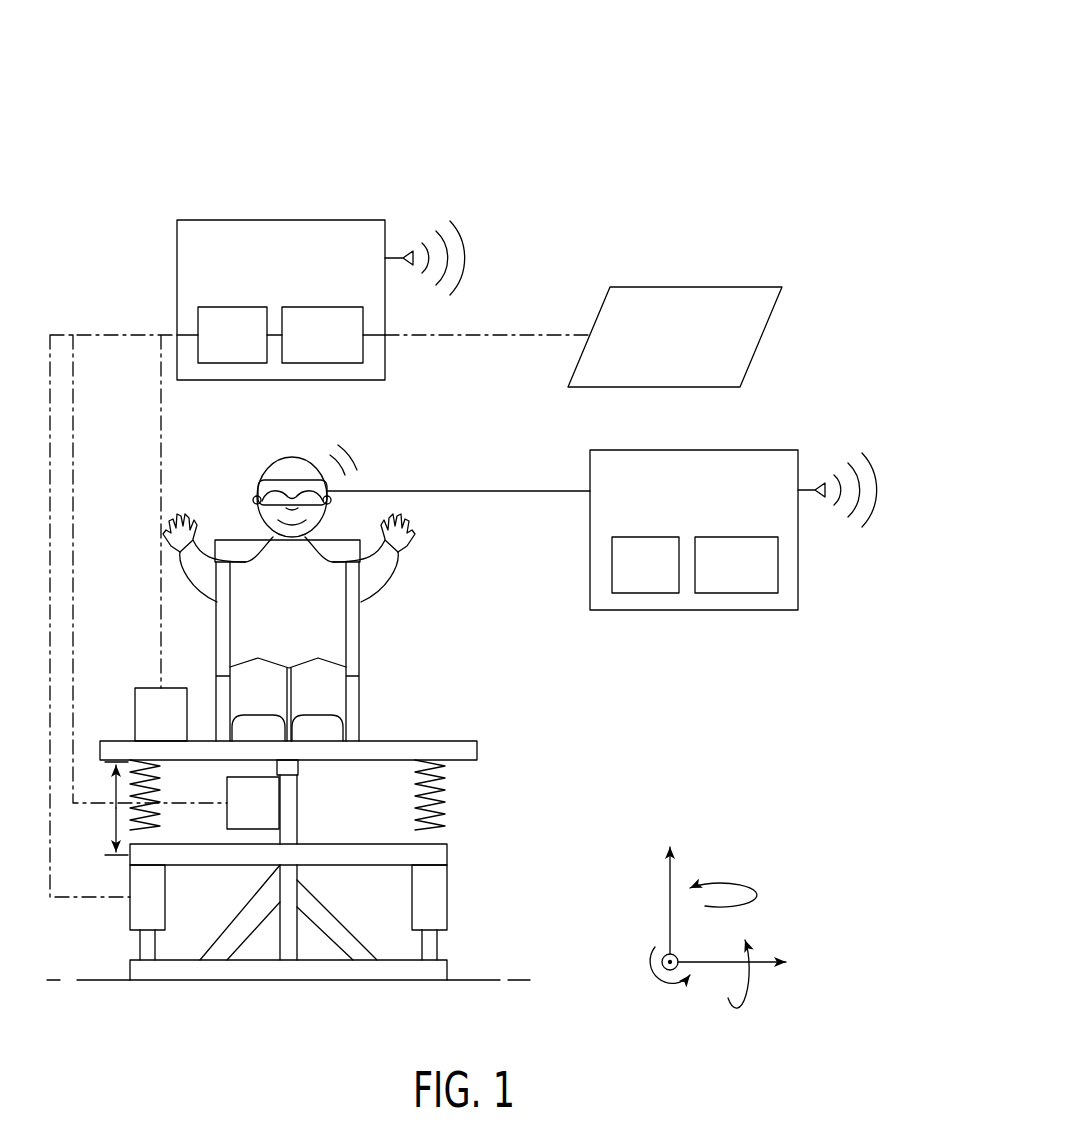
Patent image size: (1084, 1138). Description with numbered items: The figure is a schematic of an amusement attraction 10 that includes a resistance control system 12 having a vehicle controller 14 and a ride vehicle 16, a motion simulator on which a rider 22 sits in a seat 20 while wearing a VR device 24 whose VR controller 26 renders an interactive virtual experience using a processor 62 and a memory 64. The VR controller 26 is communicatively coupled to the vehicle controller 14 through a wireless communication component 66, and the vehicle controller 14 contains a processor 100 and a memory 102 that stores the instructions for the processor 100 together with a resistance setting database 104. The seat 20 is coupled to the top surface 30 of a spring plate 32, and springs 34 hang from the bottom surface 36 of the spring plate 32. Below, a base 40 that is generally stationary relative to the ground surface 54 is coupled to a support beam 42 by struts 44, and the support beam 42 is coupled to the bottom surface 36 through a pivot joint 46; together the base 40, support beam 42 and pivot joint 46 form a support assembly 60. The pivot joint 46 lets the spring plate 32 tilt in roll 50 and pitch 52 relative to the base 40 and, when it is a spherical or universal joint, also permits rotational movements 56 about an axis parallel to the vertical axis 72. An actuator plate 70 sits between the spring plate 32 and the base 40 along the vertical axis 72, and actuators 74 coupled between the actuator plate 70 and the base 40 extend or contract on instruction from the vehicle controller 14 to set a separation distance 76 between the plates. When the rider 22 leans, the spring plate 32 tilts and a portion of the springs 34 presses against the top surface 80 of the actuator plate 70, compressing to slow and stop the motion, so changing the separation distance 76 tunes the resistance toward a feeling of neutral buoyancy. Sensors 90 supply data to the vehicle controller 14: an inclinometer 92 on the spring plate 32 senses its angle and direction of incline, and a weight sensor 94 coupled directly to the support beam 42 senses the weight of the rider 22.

The amusement attraction 10 is at (626, 58).
The resistance control system 12 is at (584, 151).
The vehicle controller 14 is at (278, 303).
The ride vehicle 16 is at (401, 680).
The seat 20 is at (289, 587).
The rider 22 is at (266, 469).
The VR device 24 is at (273, 463).
The VR controller 26 is at (692, 533).
The top surface 30 is at (313, 727).
The spring plate 32 is at (464, 738).
The springs 34 is at (158, 817).
The bottom surface 36 is at (365, 760).
The base 40 is at (449, 972).
The support beam 42 is at (304, 940).
The struts 44 is at (354, 933).
The pivot joint 46 is at (304, 766).
The roll 50 is at (688, 939).
The pitch 52 is at (727, 993).
The ground surface 54 is at (105, 978).
The rotational movements 56 is at (701, 906).
The support assembly 60 is at (359, 894).
The processor 62 is at (642, 595).
The memory 64 is at (733, 595).
The wireless communication component 66 is at (394, 258).
The actuator plate 70 is at (449, 857).
The vertical axis 72 is at (673, 855).
The actuators 74 is at (165, 913).
The separation distance 76 is at (118, 822).
The top surface 80 is at (395, 844).
The sensors 90 is at (182, 776).
The inclinometer 92 is at (134, 715).
The weight sensor 94 is at (242, 829).
The processor 100 is at (230, 364).
The memory 102 is at (323, 364).
The resistance setting database 104 is at (653, 286).